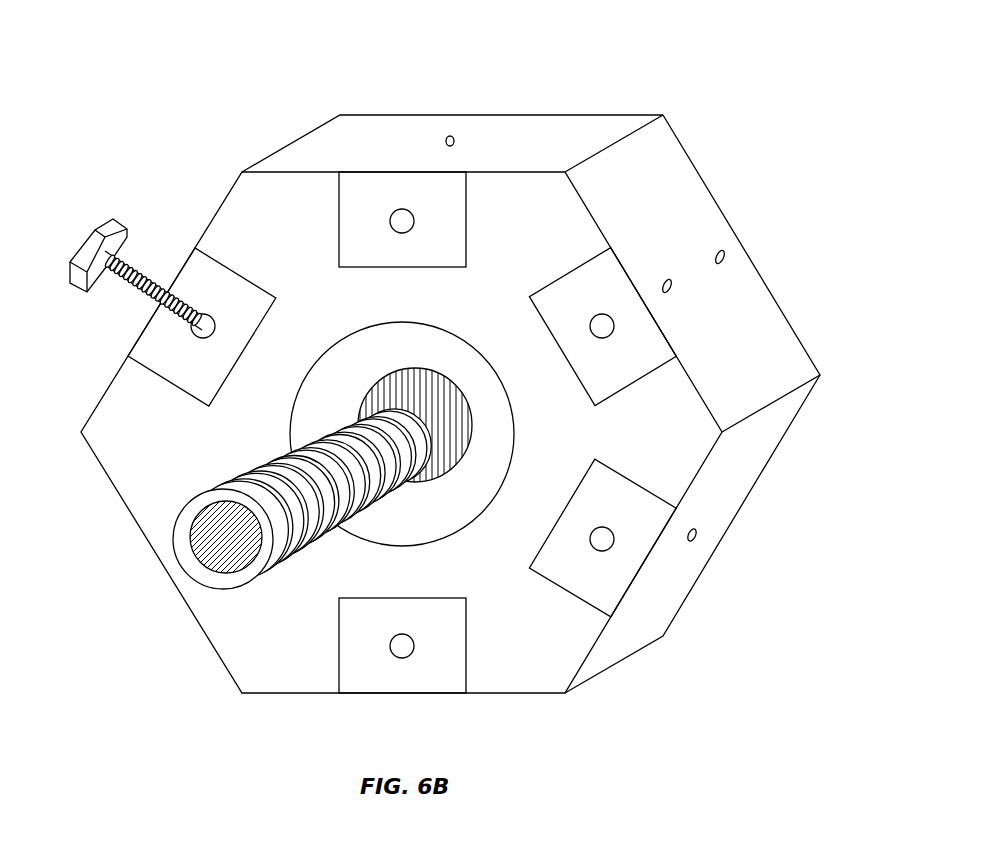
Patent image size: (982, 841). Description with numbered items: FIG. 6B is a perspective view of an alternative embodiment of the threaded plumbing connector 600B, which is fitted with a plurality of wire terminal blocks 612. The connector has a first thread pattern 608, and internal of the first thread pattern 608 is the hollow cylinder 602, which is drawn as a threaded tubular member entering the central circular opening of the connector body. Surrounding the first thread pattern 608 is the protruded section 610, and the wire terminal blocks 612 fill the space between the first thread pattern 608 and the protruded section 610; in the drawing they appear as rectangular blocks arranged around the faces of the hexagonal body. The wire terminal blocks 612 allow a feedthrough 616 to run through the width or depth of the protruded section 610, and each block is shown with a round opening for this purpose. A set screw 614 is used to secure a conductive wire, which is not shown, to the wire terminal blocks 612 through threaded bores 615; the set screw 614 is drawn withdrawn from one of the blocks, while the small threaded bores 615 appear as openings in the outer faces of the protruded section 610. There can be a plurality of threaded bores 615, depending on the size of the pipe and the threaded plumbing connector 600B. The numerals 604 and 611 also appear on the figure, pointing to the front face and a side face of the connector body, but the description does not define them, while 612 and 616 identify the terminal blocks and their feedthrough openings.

The threaded plumbing connector 600B is at (682, 68).
The hollow cylinder 602 is at (220, 548).
The front face of housing 604 is at (128, 574).
The first thread pattern 608 is at (410, 546).
The protruded section 610 is at (822, 377).
The side face of housing 611 is at (655, 147).
The wire terminal blocks 612 is at (402, 268).
The set screw 614 is at (113, 218).
The threaded bores 615 is at (452, 135).
The feedthrough 616 is at (414, 219).